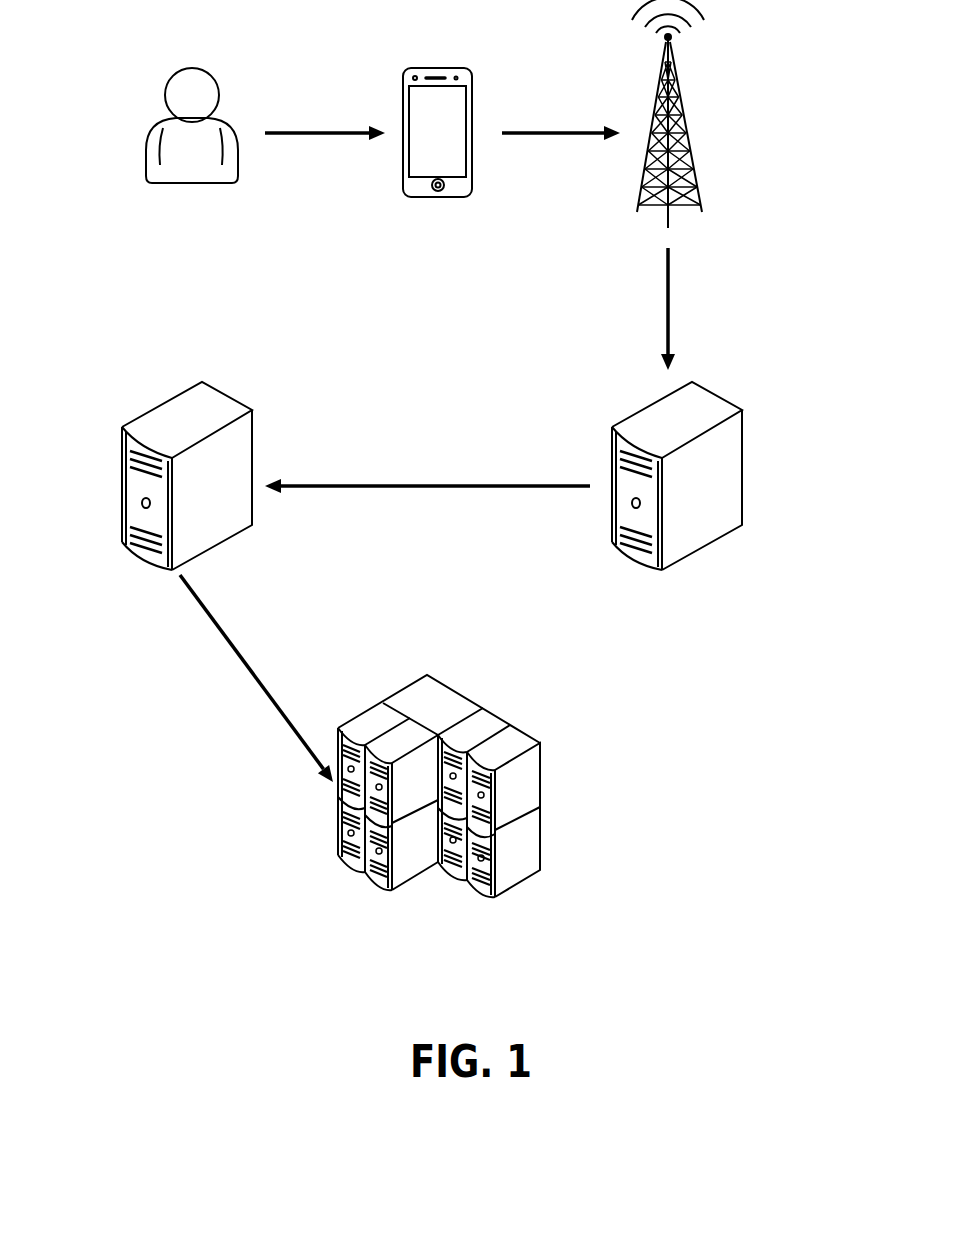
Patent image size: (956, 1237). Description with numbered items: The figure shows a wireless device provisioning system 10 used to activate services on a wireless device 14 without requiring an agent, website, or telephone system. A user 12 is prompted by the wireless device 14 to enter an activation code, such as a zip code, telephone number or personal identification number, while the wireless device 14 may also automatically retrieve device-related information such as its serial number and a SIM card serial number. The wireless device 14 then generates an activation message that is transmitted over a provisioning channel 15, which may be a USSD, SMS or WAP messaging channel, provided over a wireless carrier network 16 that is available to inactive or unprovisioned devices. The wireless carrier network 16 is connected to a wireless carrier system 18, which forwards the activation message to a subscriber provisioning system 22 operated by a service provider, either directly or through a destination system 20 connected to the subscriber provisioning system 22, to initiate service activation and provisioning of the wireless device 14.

The wireless device provisioning system 10 is at (608, 963).
The user 12 is at (158, 118).
The wireless device 14 is at (420, 66).
The provisioning channel 15 is at (566, 130).
The wireless carrier network 16 is at (683, 115).
The wireless carrier system 18 is at (728, 395).
The destination system 20 is at (232, 395).
The subscriber provisioning system 22 is at (546, 826).